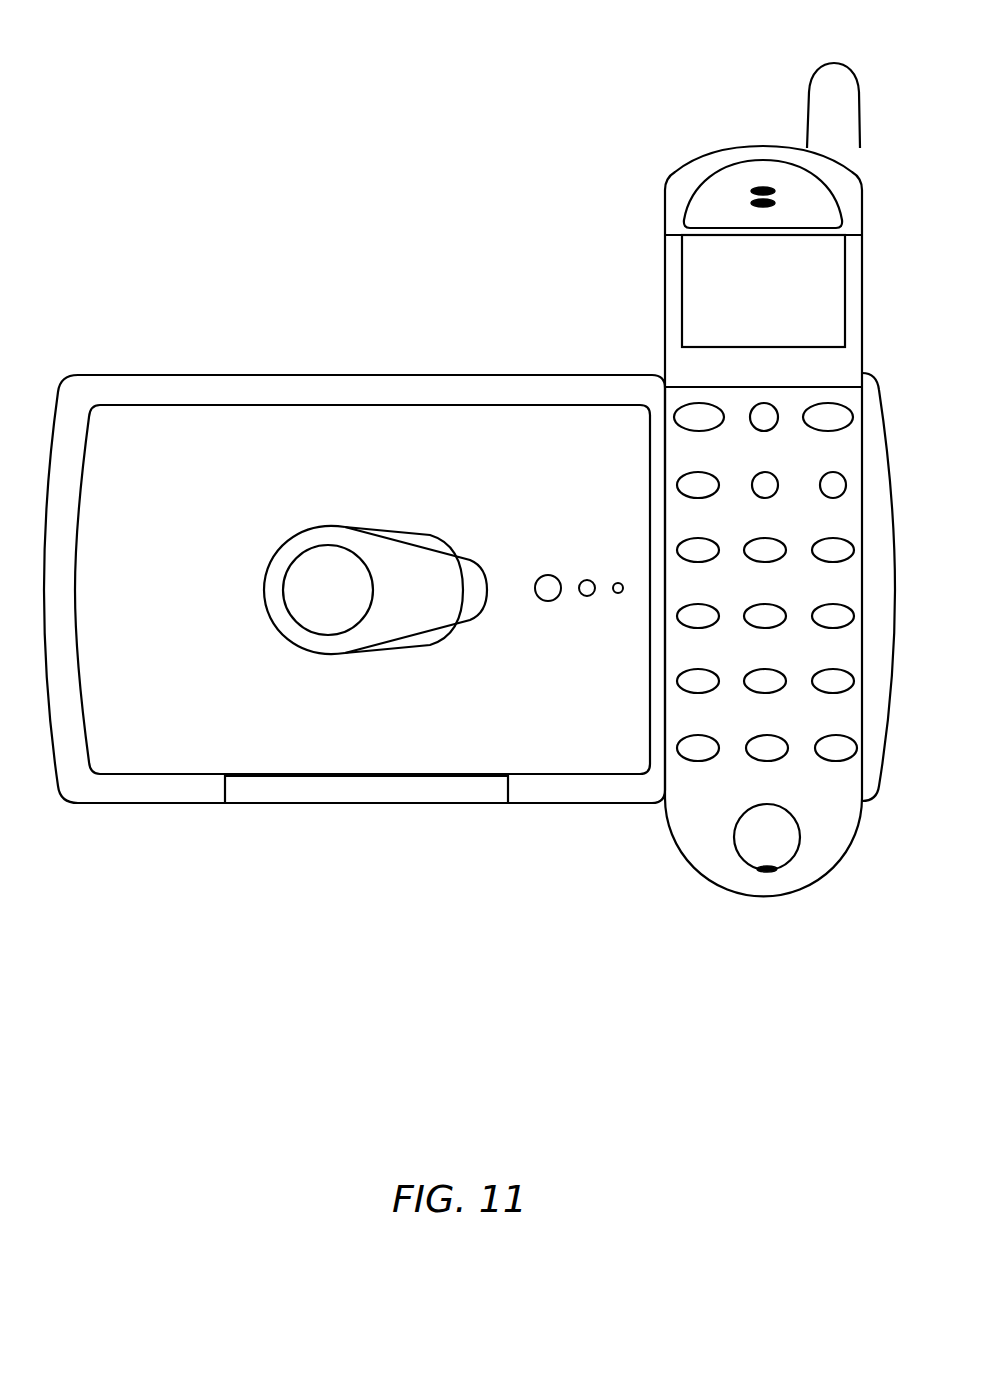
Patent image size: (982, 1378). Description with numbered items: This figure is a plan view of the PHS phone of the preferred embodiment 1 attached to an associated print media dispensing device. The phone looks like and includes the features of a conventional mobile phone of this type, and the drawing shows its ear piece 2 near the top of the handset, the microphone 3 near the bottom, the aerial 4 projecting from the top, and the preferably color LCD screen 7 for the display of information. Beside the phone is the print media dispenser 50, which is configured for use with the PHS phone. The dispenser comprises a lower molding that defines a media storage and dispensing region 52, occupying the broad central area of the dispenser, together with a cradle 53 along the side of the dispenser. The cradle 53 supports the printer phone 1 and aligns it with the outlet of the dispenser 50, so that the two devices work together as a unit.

The preferred embodiment 1 is at (645, 134).
The ear piece 2 is at (696, 206).
The microphone 3 is at (778, 847).
The aerial 4 is at (827, 100).
The LCD screen 7 is at (795, 292).
The print media dispenser 50 is at (186, 792).
The media storage and dispensing region 52 is at (374, 424).
The cradle 53 is at (654, 818).